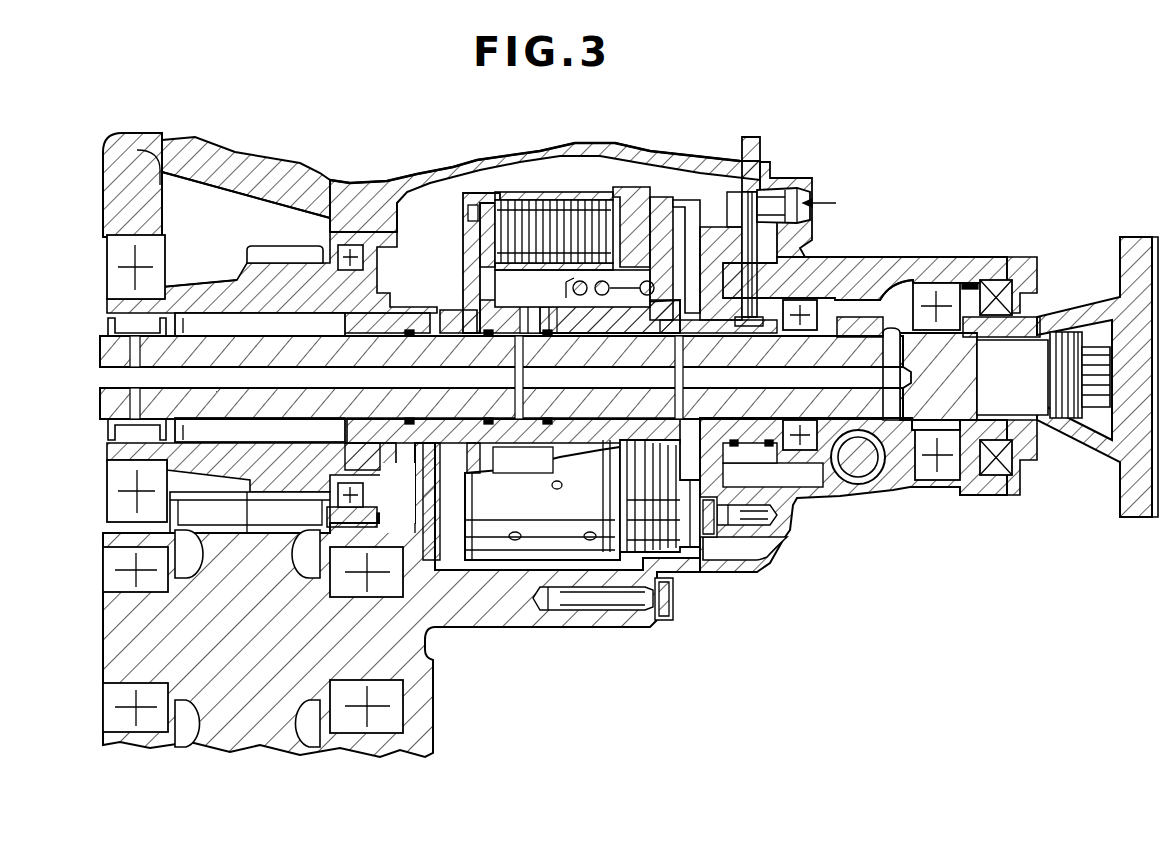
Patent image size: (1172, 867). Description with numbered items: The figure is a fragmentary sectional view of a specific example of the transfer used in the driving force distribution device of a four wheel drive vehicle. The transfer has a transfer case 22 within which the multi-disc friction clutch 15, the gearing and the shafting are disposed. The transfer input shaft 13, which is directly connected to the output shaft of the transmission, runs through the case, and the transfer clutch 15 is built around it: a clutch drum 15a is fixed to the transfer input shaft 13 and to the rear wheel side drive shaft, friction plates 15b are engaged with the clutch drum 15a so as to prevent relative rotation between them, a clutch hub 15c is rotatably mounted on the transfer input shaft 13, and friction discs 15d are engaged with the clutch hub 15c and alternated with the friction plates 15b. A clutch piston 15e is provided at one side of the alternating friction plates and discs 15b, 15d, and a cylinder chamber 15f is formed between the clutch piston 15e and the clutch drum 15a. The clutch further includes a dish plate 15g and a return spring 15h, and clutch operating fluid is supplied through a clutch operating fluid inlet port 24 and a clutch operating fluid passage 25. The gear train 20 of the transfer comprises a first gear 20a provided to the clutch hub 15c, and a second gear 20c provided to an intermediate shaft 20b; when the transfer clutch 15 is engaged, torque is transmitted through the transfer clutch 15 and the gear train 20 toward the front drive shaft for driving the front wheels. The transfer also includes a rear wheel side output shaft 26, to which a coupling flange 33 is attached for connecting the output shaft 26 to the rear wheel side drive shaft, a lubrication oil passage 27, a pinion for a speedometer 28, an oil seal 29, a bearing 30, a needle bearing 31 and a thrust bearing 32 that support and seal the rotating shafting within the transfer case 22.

The transfer input shaft 13 is at (112, 342).
The multi-disc friction clutch 15 is at (595, 203).
The clutch drum 15a is at (603, 190).
The friction plates 15b is at (500, 198).
The clutch hub 15c is at (457, 318).
The friction discs 15d is at (520, 207).
The clutch piston 15e is at (680, 200).
The cylinder chamber 15f is at (677, 272).
The dish plate 15g is at (650, 200).
The return spring 15h is at (567, 288).
The gear train 20 is at (218, 246).
The first gear 20a is at (250, 246).
The intermediate shaft 20b is at (413, 647).
The second gear 20c is at (360, 500).
The transfer case 22 is at (380, 183).
The clutch operating fluid inlet port 24 is at (803, 198).
The clutch operating fluid passage 25 is at (752, 285).
The rear wheel side output shaft 26 is at (862, 345).
The lubrication oil passage 27 is at (172, 378).
The pinion for a speedometer 28 is at (858, 465).
The oil seal 29 is at (997, 468).
The bearing 30 is at (948, 465).
The needle bearing 31 is at (400, 420).
The thrust bearing 32 is at (548, 437).
The coupling flange 33 is at (1120, 507).